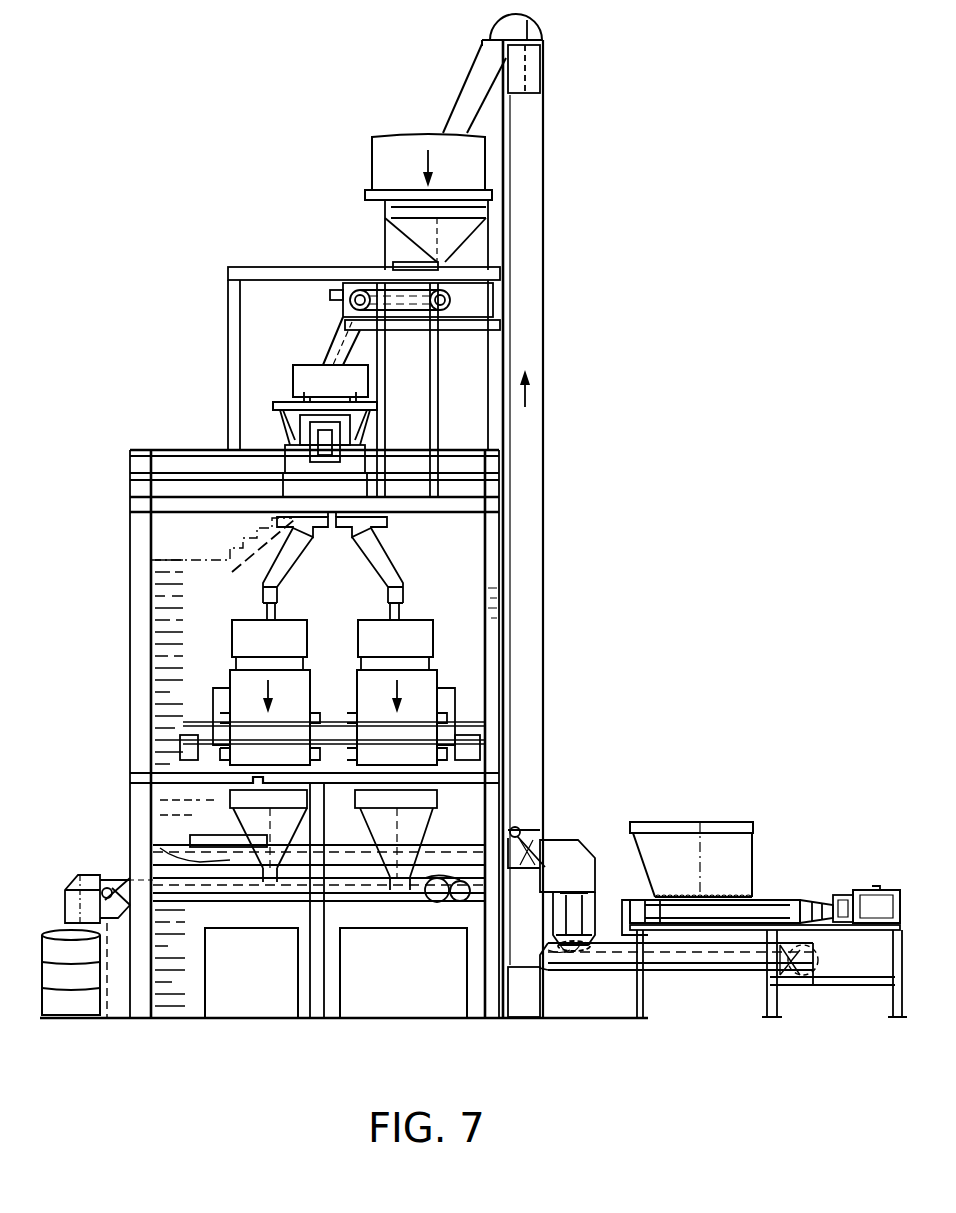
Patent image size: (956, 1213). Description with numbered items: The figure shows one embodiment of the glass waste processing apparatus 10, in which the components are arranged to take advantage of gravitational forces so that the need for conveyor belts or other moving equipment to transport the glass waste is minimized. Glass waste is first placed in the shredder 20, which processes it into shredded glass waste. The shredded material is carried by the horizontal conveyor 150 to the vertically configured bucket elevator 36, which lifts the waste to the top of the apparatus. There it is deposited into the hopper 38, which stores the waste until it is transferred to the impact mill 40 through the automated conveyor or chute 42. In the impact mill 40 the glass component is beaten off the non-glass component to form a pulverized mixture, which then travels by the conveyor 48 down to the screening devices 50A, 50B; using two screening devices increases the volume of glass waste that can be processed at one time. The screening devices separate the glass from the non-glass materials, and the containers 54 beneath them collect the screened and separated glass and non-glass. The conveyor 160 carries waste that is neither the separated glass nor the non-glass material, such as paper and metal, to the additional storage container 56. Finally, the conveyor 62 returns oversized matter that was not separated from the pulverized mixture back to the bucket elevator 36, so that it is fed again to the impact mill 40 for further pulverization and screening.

The apparatus 10 is at (288, 152).
The shredder 20 is at (757, 866).
The bucket elevator 36 is at (543, 145).
The hopper 38 is at (491, 164).
The impact mill 40 is at (374, 380).
The automated conveyor or chute 42 is at (458, 308).
The conveyor 48 is at (393, 555).
The screening device 50A is at (242, 685).
The screening device 50B is at (432, 677).
The container 54 is at (266, 991).
The additional storage container 56 is at (60, 994).
The conveyor 62 is at (157, 848).
The horizontal conveyor 150 is at (725, 962).
The conveyor 160 is at (167, 877).